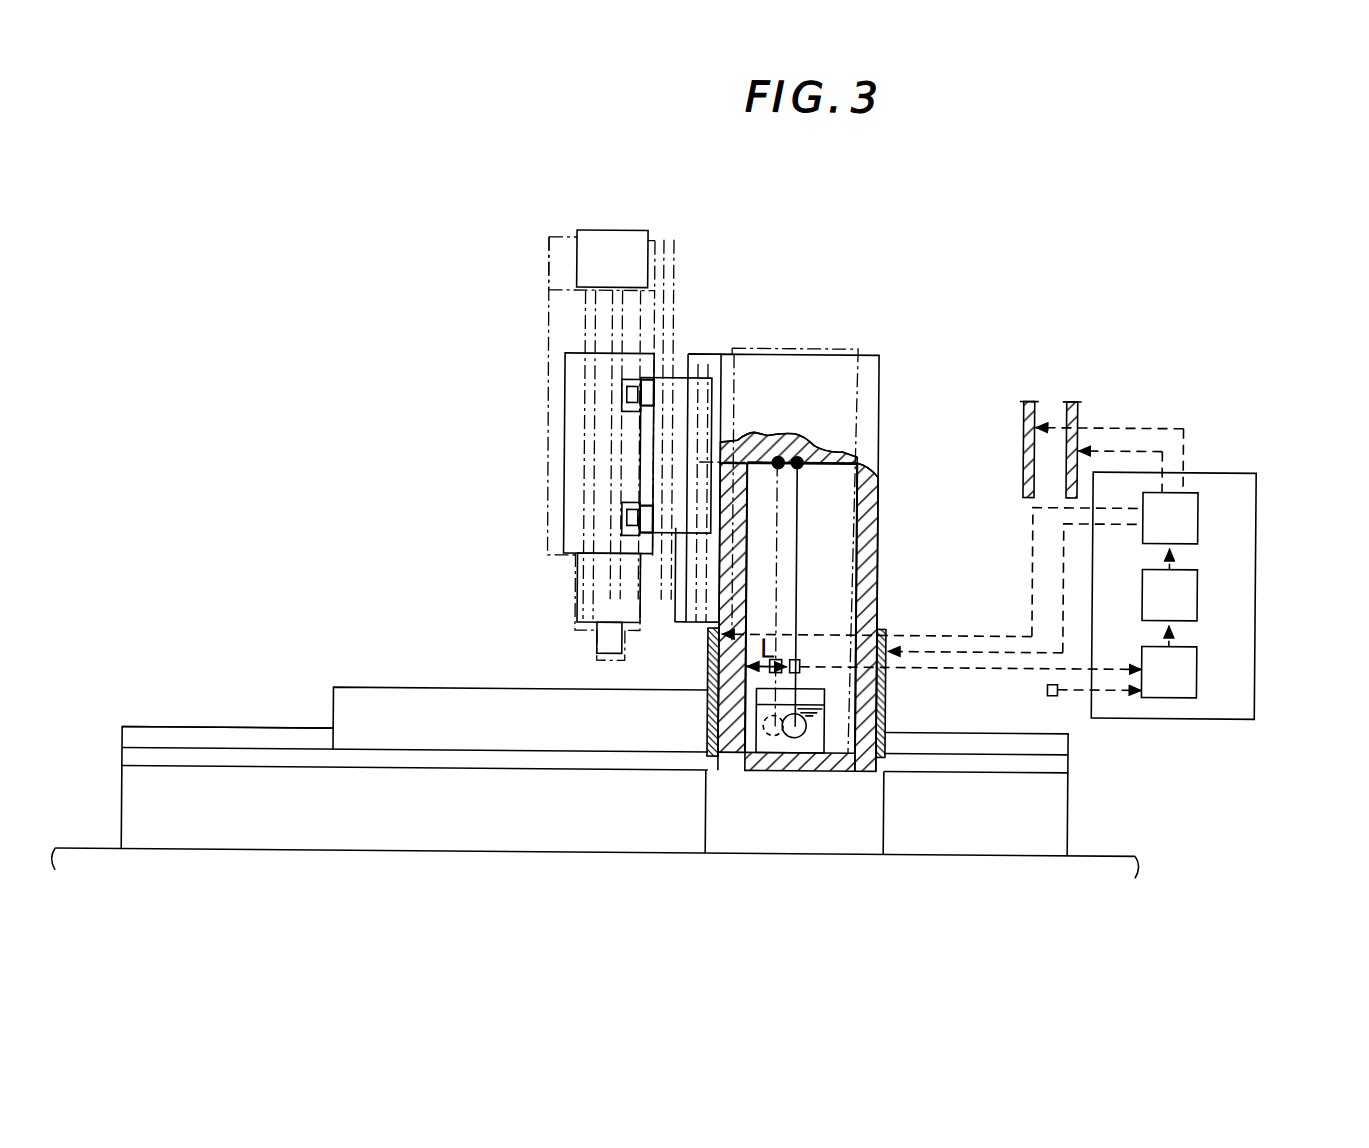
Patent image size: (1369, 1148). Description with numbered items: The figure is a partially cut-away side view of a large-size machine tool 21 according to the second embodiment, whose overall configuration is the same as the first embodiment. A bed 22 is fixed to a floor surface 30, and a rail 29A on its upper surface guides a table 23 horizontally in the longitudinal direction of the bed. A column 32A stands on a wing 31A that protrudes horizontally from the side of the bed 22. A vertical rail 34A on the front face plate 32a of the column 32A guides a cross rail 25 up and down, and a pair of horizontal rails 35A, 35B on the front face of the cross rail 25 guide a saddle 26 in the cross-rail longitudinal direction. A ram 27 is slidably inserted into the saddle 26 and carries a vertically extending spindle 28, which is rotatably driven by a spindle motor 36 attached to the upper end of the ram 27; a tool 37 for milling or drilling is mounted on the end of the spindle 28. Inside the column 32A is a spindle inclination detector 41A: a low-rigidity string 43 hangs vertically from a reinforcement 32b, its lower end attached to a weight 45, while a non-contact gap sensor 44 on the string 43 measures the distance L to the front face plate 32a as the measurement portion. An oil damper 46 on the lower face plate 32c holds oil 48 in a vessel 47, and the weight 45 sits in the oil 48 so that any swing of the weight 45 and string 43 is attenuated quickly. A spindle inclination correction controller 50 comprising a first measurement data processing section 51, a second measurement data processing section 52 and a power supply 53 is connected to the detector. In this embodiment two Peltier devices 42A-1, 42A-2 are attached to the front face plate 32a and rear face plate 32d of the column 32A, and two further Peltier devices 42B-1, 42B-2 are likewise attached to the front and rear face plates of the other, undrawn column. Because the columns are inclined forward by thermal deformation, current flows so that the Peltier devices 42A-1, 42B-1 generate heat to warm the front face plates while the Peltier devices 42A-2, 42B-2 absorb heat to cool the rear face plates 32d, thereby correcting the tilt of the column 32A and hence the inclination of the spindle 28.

The machine tool 21 is at (894, 287).
The bed 22 is at (296, 842).
The table 23 is at (371, 692).
The cross rail 25 is at (668, 392).
The saddle 26 is at (564, 359).
The ram 27 is at (587, 599).
The spindle 28 is at (585, 452).
The rail 29A is at (232, 731).
The floor surface 30 is at (95, 853).
The wing 31A is at (722, 813).
The column 32A is at (876, 356).
The front face plate 32a is at (720, 738).
The reinforcement 32b is at (787, 445).
The lower face plate 32c is at (768, 770).
The rear face plate 32d is at (882, 710).
The rail 34A is at (708, 372).
The rail 35A is at (625, 406).
The rail 35B is at (628, 526).
The spindle motor 36 is at (625, 233).
The tool 37 is at (597, 642).
The spindle inclination detector 41A is at (815, 544).
The Peltier device 42A-1 is at (707, 682).
The Peltier device 42A-2 is at (887, 688).
The Peltier device 42B-1 is at (1031, 415).
The Peltier device 42B-2 is at (1075, 416).
The string 43 is at (796, 518).
The gap sensor 44 is at (799, 661).
The weight 45 is at (797, 733).
The oil damper 46 is at (818, 724).
The vessel 47 is at (866, 711).
The oil 48 is at (826, 711).
The spindle inclination correction controller 50 is at (1215, 469).
The first measurement data processing section 51 is at (1196, 667).
The second measurement data processing section 52 is at (1196, 590).
The power supply 53 is at (1196, 515).